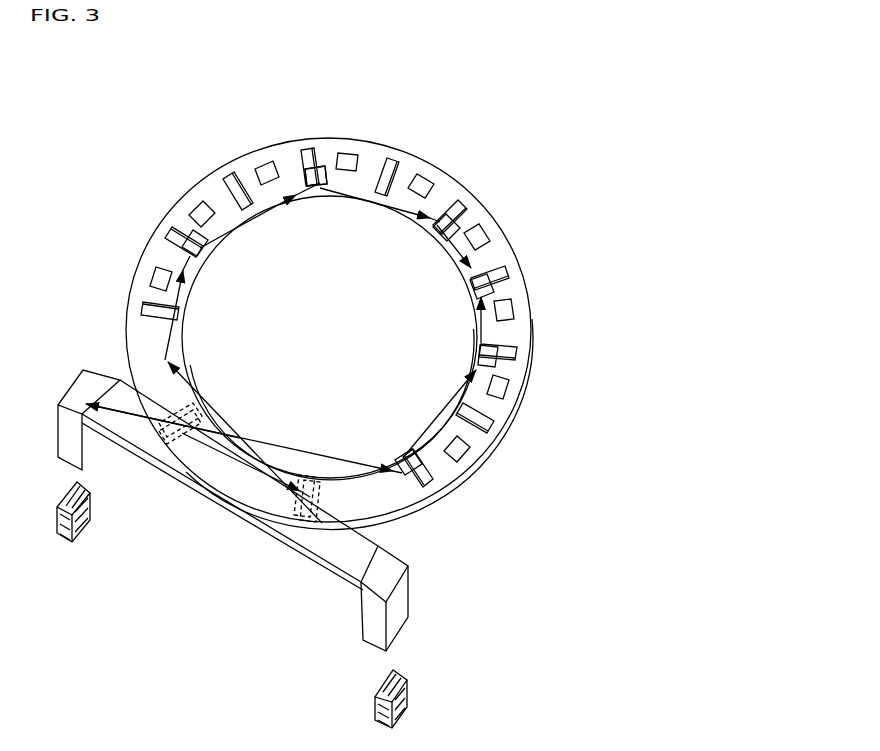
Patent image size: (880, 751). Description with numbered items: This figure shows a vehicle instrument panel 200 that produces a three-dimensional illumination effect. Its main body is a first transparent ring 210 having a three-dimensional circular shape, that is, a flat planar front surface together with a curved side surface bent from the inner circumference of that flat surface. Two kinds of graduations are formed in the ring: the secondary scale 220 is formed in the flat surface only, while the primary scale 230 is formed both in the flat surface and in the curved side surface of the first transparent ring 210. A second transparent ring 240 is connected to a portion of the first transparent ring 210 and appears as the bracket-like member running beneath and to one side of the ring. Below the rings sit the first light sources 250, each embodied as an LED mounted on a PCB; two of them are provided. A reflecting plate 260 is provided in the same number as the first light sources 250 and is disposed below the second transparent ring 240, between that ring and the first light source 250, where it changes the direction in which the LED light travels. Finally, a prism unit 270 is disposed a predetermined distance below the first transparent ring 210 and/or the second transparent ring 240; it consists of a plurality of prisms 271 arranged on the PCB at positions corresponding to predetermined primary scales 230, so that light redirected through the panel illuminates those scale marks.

The vehicle instrument panel 200 is at (120, 160).
The first transparent ring 210 is at (493, 220).
The secondary scale 220 is at (520, 295).
The primary scale 230 is at (513, 350).
The second transparent ring 240 is at (410, 580).
The first light source 250 is at (408, 688).
The reflecting plate 260 is at (172, 418).
The prism unit 270 is at (318, 162).
The prism 271 is at (316, 176).